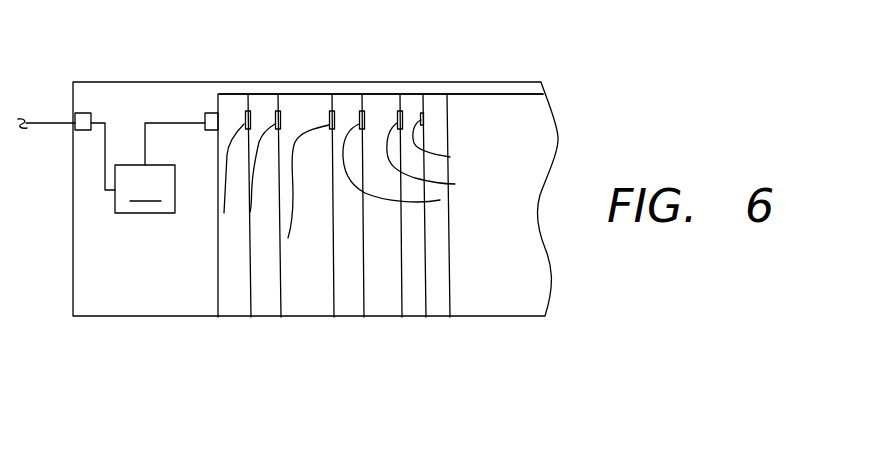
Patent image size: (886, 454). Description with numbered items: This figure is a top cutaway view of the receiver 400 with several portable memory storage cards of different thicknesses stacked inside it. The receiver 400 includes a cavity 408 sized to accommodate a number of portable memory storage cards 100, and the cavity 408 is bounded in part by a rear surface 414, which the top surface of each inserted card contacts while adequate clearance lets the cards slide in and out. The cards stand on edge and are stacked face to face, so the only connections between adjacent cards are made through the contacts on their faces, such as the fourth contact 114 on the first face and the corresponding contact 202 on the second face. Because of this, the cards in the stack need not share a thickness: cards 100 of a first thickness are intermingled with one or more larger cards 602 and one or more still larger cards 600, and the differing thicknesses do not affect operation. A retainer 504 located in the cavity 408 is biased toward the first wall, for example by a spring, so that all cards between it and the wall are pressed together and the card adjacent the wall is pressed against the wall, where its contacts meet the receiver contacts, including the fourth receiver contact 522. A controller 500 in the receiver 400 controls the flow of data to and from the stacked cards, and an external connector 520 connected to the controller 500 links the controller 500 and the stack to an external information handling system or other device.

The portable memory storage card 100 is at (268, 318).
The fourth contact 114 is at (245, 112).
The contact 202 is at (288, 238).
The receiver 400 is at (592, 95).
The cavity 408 is at (491, 293).
The rear surface 414 is at (489, 93).
The controller 500 is at (145, 189).
The retainer 504 is at (435, 318).
The external connector 520 is at (84, 112).
The fourth receiver contact 522 is at (204, 118).
The still larger card 600 is at (310, 318).
The larger card 602 is at (380, 318).